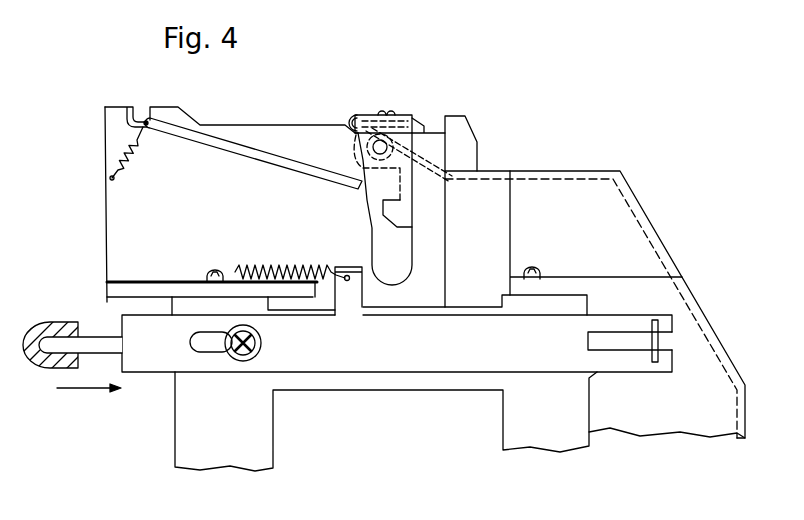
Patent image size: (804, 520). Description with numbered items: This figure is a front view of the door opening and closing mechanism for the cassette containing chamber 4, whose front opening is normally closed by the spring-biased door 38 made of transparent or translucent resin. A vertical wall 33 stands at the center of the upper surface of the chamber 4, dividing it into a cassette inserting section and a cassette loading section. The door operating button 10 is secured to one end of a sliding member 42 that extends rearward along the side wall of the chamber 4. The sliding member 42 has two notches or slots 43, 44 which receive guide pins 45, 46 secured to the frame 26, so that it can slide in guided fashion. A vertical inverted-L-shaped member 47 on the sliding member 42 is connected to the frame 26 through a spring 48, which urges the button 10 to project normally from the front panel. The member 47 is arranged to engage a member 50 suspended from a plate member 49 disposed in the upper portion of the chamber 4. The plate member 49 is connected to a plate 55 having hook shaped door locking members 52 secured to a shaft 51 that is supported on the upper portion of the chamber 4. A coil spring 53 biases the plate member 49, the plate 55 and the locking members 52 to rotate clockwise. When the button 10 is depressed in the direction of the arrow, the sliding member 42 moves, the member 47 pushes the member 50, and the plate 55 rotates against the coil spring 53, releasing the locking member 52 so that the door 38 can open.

The cassette containing chamber 4 is at (318, 113).
The door operating button 10 is at (50, 322).
The frame 26 is at (518, 418).
The vertical wall 33 is at (447, 122).
The door 38 is at (230, 148).
The sliding member 42 is at (390, 362).
The slot 43 is at (630, 342).
The slot 44 is at (208, 348).
The guide pin 45 is at (658, 342).
The guide pin 46 is at (250, 352).
The vertical inverted-L-shaped member 47 is at (347, 265).
The spring 48 is at (260, 258).
The plate member 49 is at (413, 114).
The member 50 is at (398, 258).
The shaft 51 is at (373, 147).
The door locking member 52 is at (403, 213).
The coil spring 53 is at (353, 114).
The plate 55 is at (387, 112).